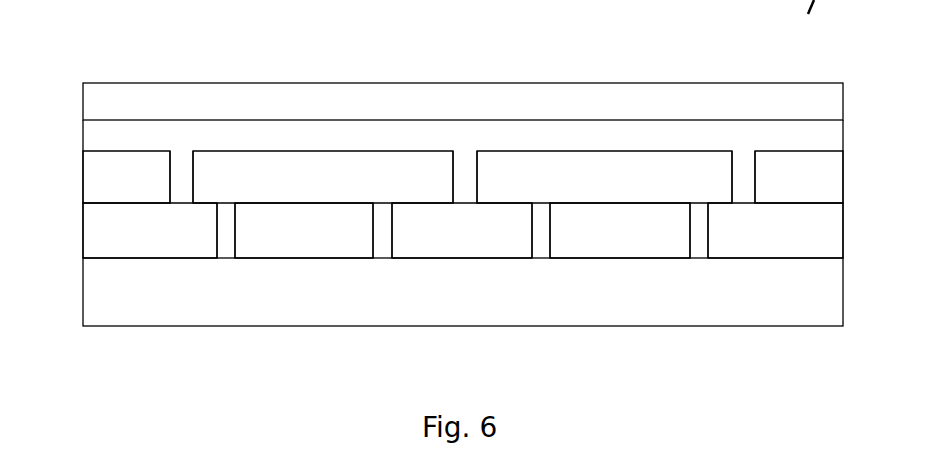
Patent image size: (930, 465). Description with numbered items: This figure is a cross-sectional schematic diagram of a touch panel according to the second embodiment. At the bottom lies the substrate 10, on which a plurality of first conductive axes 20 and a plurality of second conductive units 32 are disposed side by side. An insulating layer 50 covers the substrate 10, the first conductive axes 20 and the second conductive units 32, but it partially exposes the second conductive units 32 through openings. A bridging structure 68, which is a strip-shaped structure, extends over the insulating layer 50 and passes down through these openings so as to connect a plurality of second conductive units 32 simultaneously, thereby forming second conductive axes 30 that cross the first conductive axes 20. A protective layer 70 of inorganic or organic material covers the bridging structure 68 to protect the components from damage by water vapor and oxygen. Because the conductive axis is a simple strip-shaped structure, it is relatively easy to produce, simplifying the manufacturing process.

The substrate 10 is at (453, 306).
The first conductive axis 20 is at (294, 242).
The second conductive axis 30 is at (107, 240).
The second conductive unit 32 is at (138, 242).
The insulating layer 50 is at (118, 187).
The bridging structure 68 is at (452, 142).
The protective layer 70 is at (453, 109).